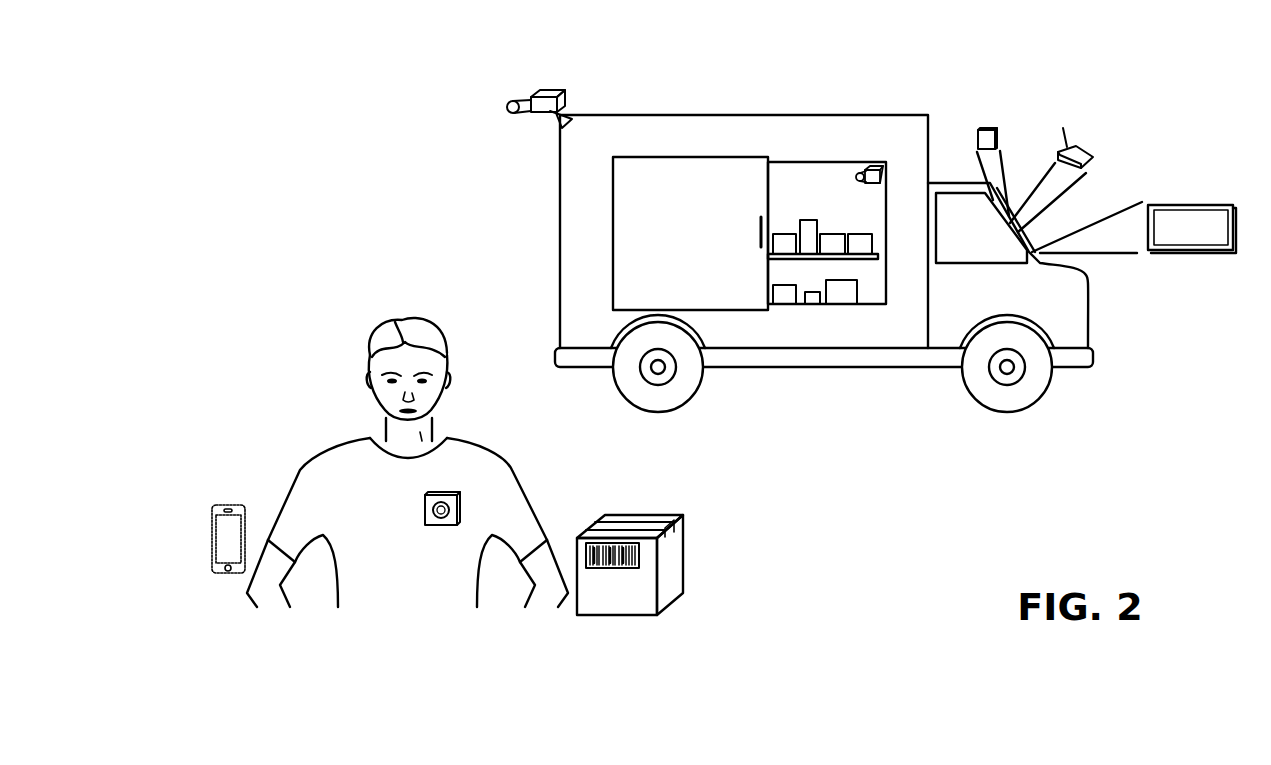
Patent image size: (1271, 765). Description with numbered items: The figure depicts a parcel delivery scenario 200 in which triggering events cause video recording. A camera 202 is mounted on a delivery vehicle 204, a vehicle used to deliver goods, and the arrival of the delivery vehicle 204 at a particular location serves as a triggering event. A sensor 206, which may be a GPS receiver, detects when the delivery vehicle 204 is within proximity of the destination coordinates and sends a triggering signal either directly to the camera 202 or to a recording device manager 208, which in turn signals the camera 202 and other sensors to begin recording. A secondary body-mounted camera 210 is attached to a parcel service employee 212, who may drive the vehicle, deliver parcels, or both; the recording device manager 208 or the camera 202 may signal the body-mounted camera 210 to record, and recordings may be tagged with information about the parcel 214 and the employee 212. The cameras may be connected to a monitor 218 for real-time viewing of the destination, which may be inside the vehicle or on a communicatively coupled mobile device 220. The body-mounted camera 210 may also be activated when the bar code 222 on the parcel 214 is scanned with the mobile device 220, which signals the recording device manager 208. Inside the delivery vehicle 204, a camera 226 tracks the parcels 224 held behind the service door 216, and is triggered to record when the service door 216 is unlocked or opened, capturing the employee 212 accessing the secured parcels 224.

The delivery environment 200 is at (403, 95).
The camera 202 is at (547, 92).
The delivery vehicle 204 is at (740, 113).
The sensor 206 is at (989, 128).
The recording device manager 208 is at (1080, 148).
The body-mounted camera 210 is at (450, 493).
The parcel service employee 212 is at (457, 441).
The parcel 214 is at (678, 560).
The service door 216 is at (637, 232).
The monitor 218 is at (1200, 205).
The mobile device 220 is at (232, 503).
The bar code 222 is at (632, 550).
The parcels 224 is at (838, 300).
The camera 226 is at (870, 165).